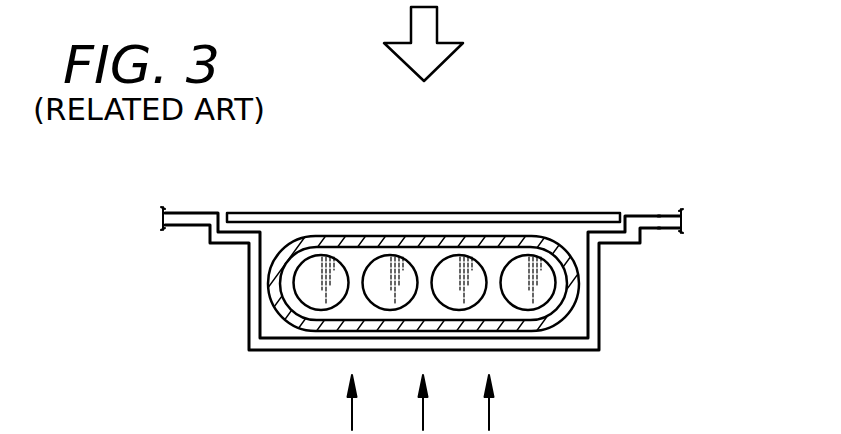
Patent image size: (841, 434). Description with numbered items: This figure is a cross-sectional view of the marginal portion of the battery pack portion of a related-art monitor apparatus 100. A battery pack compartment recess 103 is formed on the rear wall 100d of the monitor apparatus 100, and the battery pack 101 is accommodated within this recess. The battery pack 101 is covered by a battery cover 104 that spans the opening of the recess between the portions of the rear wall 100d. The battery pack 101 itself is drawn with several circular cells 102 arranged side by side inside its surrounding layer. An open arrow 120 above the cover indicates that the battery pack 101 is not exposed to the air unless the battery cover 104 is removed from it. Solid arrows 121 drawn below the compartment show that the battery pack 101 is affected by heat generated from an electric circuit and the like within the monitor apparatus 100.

The monitor apparatus 100 is at (248, 302).
The rear wall 100d is at (660, 215).
The battery pack 101 is at (477, 238).
The heater lamps 102 is at (314, 292).
The battery pack compartment recess 103 is at (580, 313).
The battery cover 104 is at (587, 213).
The open arrow 120 is at (437, 20).
The solid arrows 121 is at (490, 405).